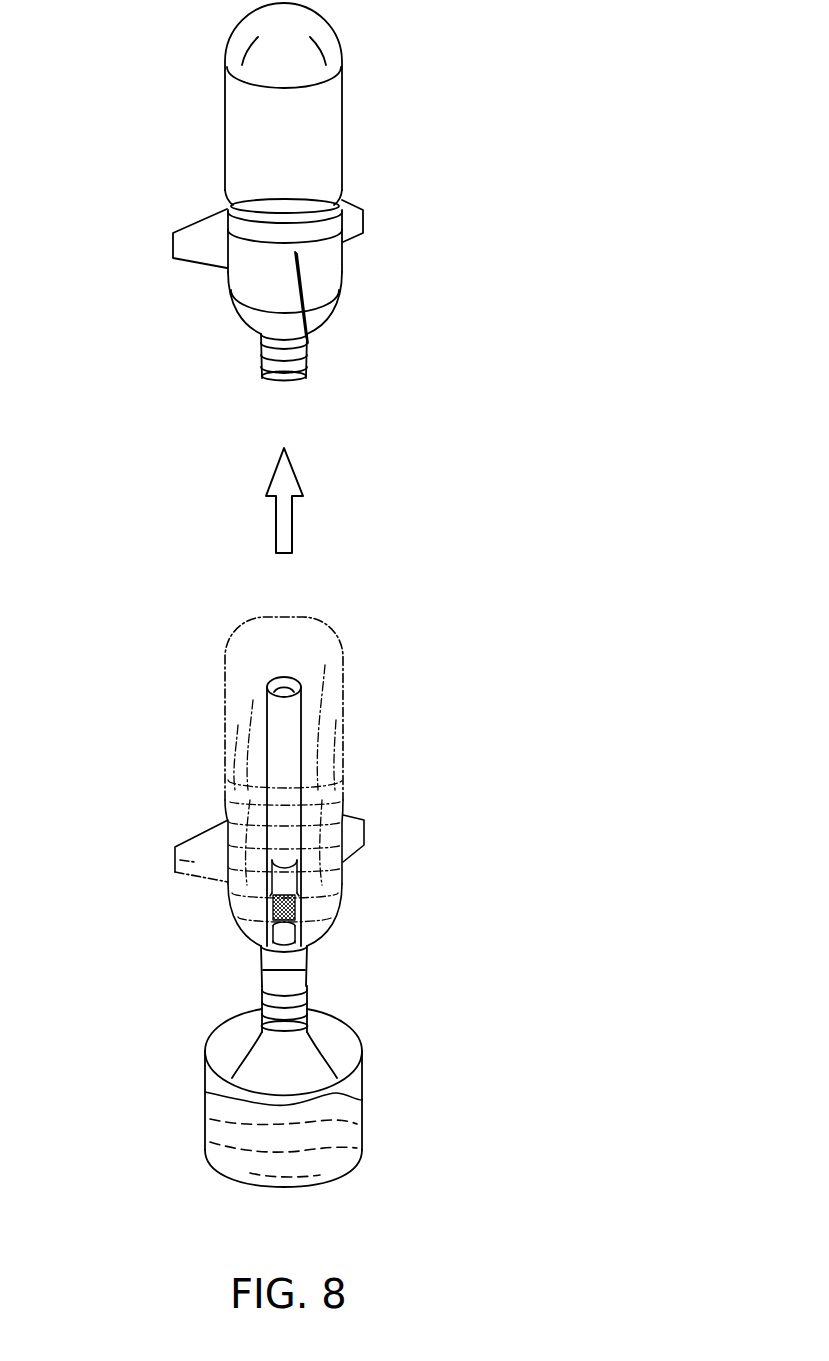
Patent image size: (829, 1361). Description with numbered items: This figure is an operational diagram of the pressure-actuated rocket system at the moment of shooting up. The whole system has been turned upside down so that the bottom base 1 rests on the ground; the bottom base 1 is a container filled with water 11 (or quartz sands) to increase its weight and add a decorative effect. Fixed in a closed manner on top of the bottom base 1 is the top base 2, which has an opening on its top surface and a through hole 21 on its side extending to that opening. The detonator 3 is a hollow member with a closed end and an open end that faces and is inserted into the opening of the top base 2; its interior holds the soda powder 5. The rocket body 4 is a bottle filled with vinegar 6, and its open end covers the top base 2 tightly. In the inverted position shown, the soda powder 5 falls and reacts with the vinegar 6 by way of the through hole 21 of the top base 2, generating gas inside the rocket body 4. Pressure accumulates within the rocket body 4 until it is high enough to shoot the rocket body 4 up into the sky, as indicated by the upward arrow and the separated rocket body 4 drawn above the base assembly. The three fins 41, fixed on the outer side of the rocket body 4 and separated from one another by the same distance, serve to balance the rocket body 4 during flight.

The bottom base 1 is at (362, 1110).
The water 11 is at (303, 1148).
The top base 2 is at (283, 980).
The through hole 21 is at (285, 935).
The detonator 3 is at (287, 742).
The rocket body 4 is at (320, 133).
The fins 41 is at (302, 305).
The soda powder 5 is at (293, 898).
The vinegar 6 is at (327, 812).